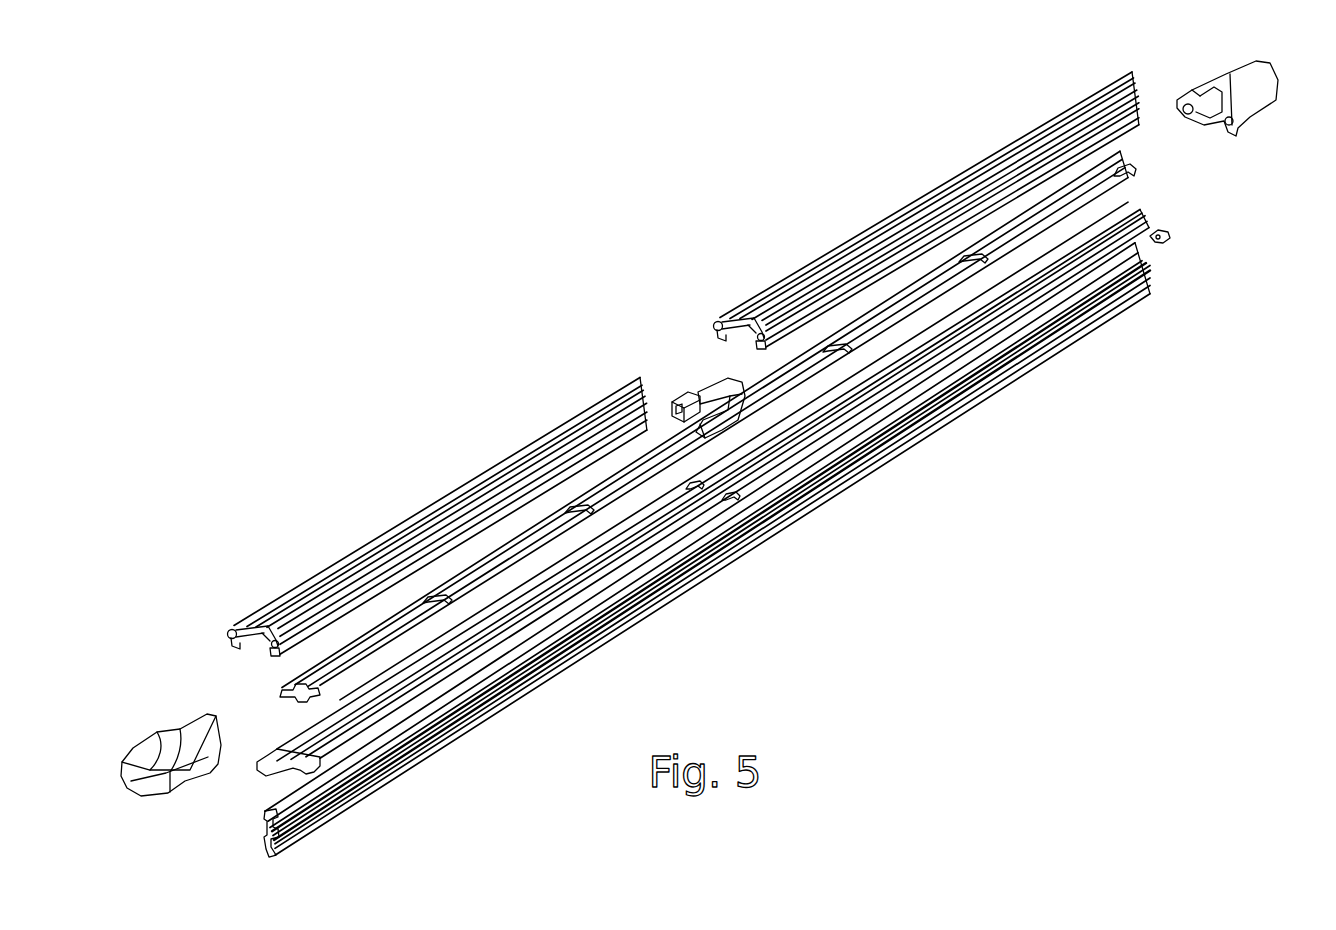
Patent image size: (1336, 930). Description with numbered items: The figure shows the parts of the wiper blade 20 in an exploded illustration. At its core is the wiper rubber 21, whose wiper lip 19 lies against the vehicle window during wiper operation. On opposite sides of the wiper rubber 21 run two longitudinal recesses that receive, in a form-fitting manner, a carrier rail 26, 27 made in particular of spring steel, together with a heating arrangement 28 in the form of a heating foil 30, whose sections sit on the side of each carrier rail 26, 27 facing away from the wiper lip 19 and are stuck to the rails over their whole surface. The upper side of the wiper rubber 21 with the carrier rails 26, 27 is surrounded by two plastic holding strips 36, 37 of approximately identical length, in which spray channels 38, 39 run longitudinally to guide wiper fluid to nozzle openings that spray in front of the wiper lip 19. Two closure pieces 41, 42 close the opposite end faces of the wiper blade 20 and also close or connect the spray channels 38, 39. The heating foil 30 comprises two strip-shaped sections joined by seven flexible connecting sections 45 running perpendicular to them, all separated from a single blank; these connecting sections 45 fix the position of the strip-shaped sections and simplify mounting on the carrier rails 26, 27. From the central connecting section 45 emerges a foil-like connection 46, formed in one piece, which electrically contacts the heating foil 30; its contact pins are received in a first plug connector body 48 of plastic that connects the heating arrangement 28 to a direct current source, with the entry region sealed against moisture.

The wiper lip 19 is at (782, 518).
The wiper blade 20 is at (592, 288).
The wiper rubber 21 is at (925, 405).
The carrier rail 26 is at (1150, 215).
The carrier rail 27 is at (1168, 238).
The heating arrangement 28 is at (704, 426).
The heating foil 30 is at (910, 288).
The holding strip 36 is at (363, 550).
The holding strip 37 is at (978, 162).
The spray channel 38 is at (228, 633).
The spray channel 39 is at (263, 648).
The closure piece 41 is at (157, 790).
The closure piece 42 is at (1270, 102).
The connecting section 45 is at (570, 505).
The connection 46 is at (723, 382).
The first plug connector body 48 is at (682, 392).